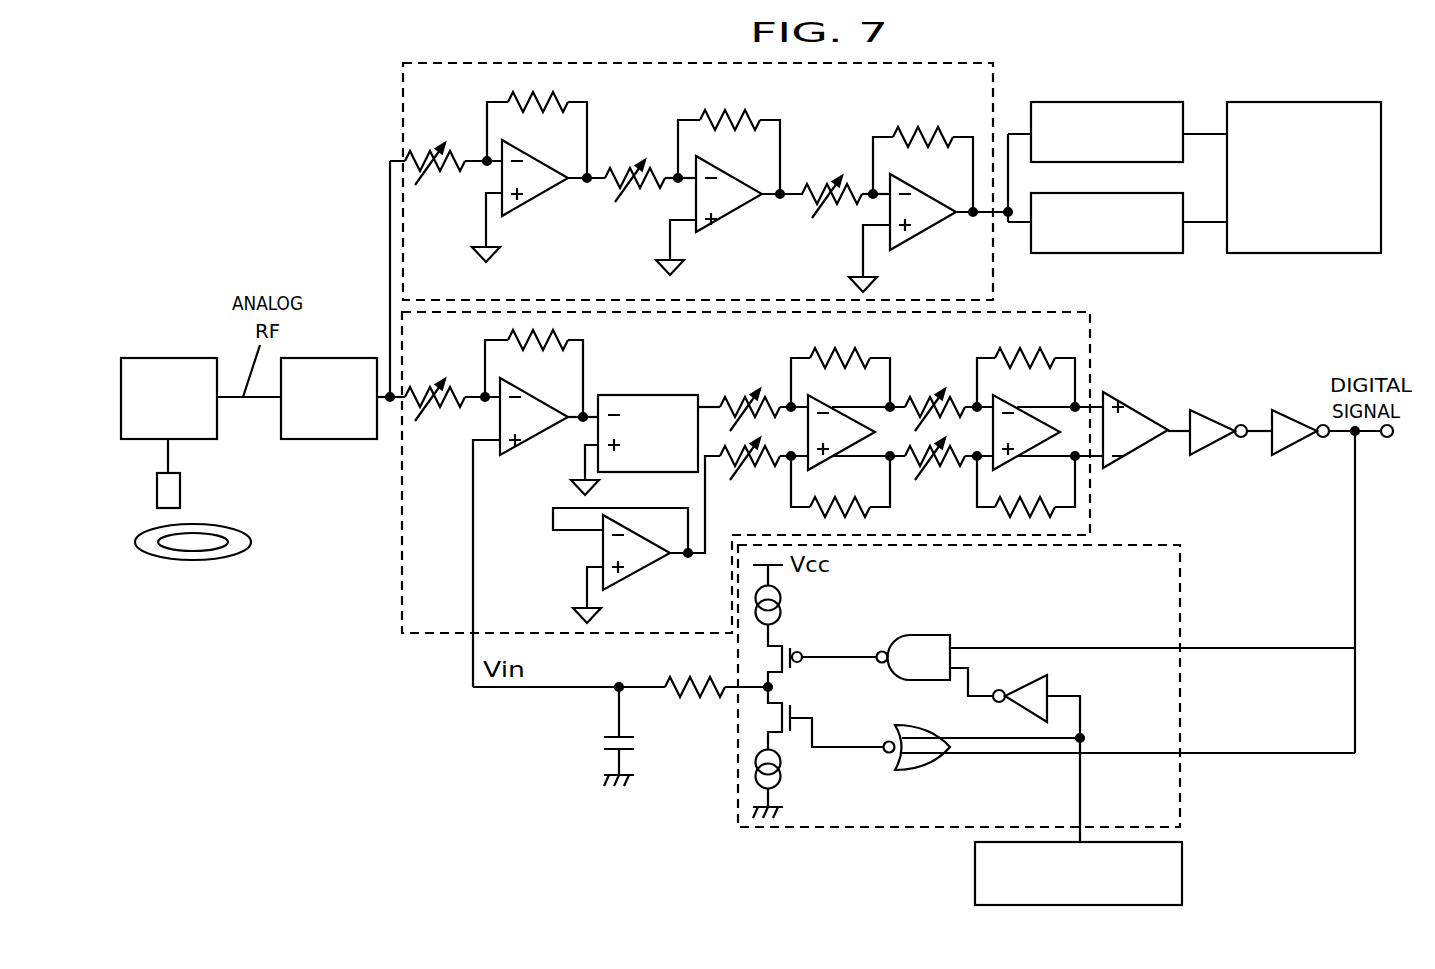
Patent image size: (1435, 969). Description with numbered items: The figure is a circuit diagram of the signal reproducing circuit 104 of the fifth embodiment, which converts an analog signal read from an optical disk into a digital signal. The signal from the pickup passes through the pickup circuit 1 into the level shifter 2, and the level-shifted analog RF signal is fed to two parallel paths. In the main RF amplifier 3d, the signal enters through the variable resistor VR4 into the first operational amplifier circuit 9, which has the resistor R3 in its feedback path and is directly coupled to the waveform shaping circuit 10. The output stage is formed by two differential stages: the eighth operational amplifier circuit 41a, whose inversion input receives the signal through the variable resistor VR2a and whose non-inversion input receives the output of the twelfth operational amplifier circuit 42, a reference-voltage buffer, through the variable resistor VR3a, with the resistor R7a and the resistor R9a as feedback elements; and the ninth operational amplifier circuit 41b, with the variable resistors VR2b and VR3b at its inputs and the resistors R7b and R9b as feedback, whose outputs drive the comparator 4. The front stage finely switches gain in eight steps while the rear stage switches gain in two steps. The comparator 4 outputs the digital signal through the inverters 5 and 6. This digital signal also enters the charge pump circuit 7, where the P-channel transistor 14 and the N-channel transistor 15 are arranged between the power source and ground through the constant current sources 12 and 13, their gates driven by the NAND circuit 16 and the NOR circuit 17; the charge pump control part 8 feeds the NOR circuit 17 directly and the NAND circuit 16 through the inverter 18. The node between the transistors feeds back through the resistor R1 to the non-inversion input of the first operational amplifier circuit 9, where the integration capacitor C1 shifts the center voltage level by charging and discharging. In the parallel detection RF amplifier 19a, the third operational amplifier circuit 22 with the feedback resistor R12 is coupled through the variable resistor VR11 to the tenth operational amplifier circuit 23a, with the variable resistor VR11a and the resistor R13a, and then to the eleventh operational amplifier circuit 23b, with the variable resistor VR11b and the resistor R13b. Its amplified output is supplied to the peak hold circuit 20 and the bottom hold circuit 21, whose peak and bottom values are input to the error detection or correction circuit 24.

The pickup circuit 1 is at (200, 440).
The level shifter 2 is at (345, 440).
The RF amplifier 3d is at (1090, 318).
The comparator 4 is at (1152, 417).
The inverter 5 is at (1208, 448).
The inverter 6 is at (1290, 448).
The charge pump circuit 7 is at (1178, 611).
The charge pump control part 8 is at (1183, 867).
The first operational amplifier circuit 9 is at (548, 400).
The waveform shaping circuit 10 is at (622, 393).
The constant current source 12 is at (785, 593).
The constant current source 13 is at (777, 778).
The P-channel transistor 14 is at (795, 650).
The N-channel transistor 15 is at (795, 713).
The NAND circuit 16 is at (910, 635).
The NOR circuit 17 is at (910, 770).
The inverter 18 is at (1048, 690).
The RF amplifier 19a is at (402, 115).
The peak hold circuit 20 is at (1130, 101).
The bottom hold circuit 21 is at (1130, 193).
The third operational amplifier circuit 22 is at (549, 168).
The tenth operational amplifier circuit 23a is at (744, 182).
The eleventh operational amplifier circuit 23b is at (940, 200).
The error detection or correction circuit 24 is at (1328, 101).
The eighth operational amplifier circuit 41a is at (812, 395).
The ninth operational amplifier circuit 41b is at (1043, 418).
The twelfth operational amplifier circuit 42 is at (653, 568).
The signal reproducing circuit 104 is at (377, 203).
The resistor R1 is at (695, 668).
The integration capacitor C1 is at (629, 737).
The resistor R3 is at (566, 334).
The resistor R7a is at (860, 347).
The resistor R7b is at (1005, 345).
The resistor R9a is at (840, 486).
The resistor R9b is at (1026, 486).
The resistor R12 is at (553, 95).
The resistor R13a is at (752, 113).
The resistor R13b is at (935, 130).
The variable resistor VR4 is at (435, 378).
The variable resistor VR2a is at (748, 391).
The variable resistor VR2b is at (934, 391).
The variable resistor VR3a is at (755, 480).
The variable resistor VR3b is at (940, 476).
The variable resistor VR11 is at (441, 187).
The variable resistor VR11a is at (634, 161).
The variable resistor VR11b is at (829, 178).